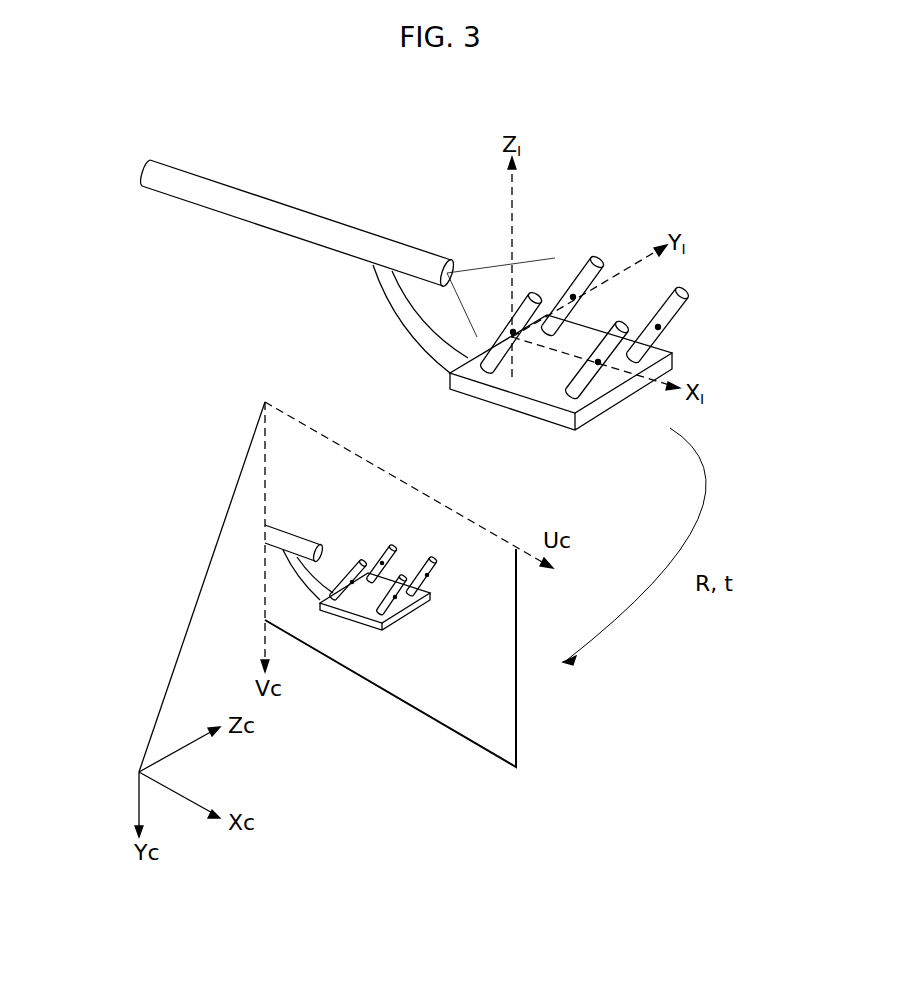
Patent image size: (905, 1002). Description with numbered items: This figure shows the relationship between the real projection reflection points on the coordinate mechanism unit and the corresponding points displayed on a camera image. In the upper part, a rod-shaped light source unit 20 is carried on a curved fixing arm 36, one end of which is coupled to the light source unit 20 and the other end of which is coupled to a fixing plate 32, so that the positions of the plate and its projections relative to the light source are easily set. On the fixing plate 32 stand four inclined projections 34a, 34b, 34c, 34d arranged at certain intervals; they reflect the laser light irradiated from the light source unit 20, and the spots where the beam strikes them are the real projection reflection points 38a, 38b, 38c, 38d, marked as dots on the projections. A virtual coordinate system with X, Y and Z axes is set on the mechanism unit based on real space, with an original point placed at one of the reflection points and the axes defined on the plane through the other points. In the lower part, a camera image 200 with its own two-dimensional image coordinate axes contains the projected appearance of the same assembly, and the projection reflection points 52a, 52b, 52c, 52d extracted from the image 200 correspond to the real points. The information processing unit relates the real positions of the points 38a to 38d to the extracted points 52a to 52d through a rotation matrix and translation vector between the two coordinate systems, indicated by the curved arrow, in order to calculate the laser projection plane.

The light source unit 20 is at (272, 210).
The fixing arm 36 is at (392, 298).
The fixing plate 32 is at (450, 380).
The inclined projection 34a is at (487, 366).
The inclined projection 34b is at (597, 258).
The inclined projection 34c is at (688, 300).
The inclined projection 34d is at (585, 400).
The projection reflection point 38a is at (513, 335).
The projection reflection point 38b is at (573, 297).
The projection reflection point 38c is at (662, 329).
The projection reflection point 38d is at (600, 365).
The projection reflection point extracted from image 52a is at (352, 584).
The projection reflection point extracted from image 52b is at (382, 561).
The projection reflection point extracted from image 52c is at (428, 573).
The projection reflection point extracted from image 52d is at (395, 599).
The image 200 is at (505, 720).